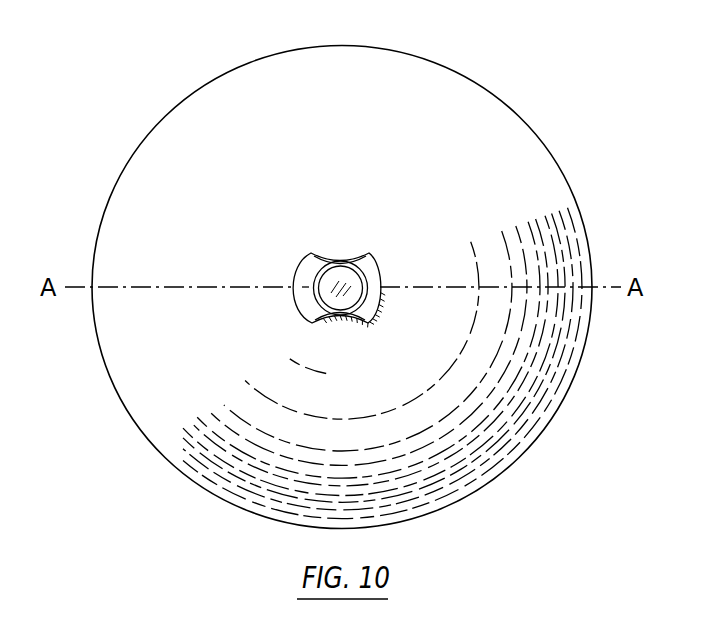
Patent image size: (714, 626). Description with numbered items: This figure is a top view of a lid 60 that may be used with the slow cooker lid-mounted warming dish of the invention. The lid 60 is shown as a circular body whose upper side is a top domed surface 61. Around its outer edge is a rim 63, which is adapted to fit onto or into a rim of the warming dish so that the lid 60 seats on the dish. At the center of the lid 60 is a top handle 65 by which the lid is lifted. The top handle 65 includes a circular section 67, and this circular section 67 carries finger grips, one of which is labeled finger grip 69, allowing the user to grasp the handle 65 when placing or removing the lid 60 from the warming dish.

The lid 60 is at (509, 88).
The top domed surface 61 is at (488, 174).
The rim 63 is at (532, 437).
The top handle 65 is at (284, 255).
The circular section 67 is at (366, 276).
The finger grip 69 is at (334, 257).